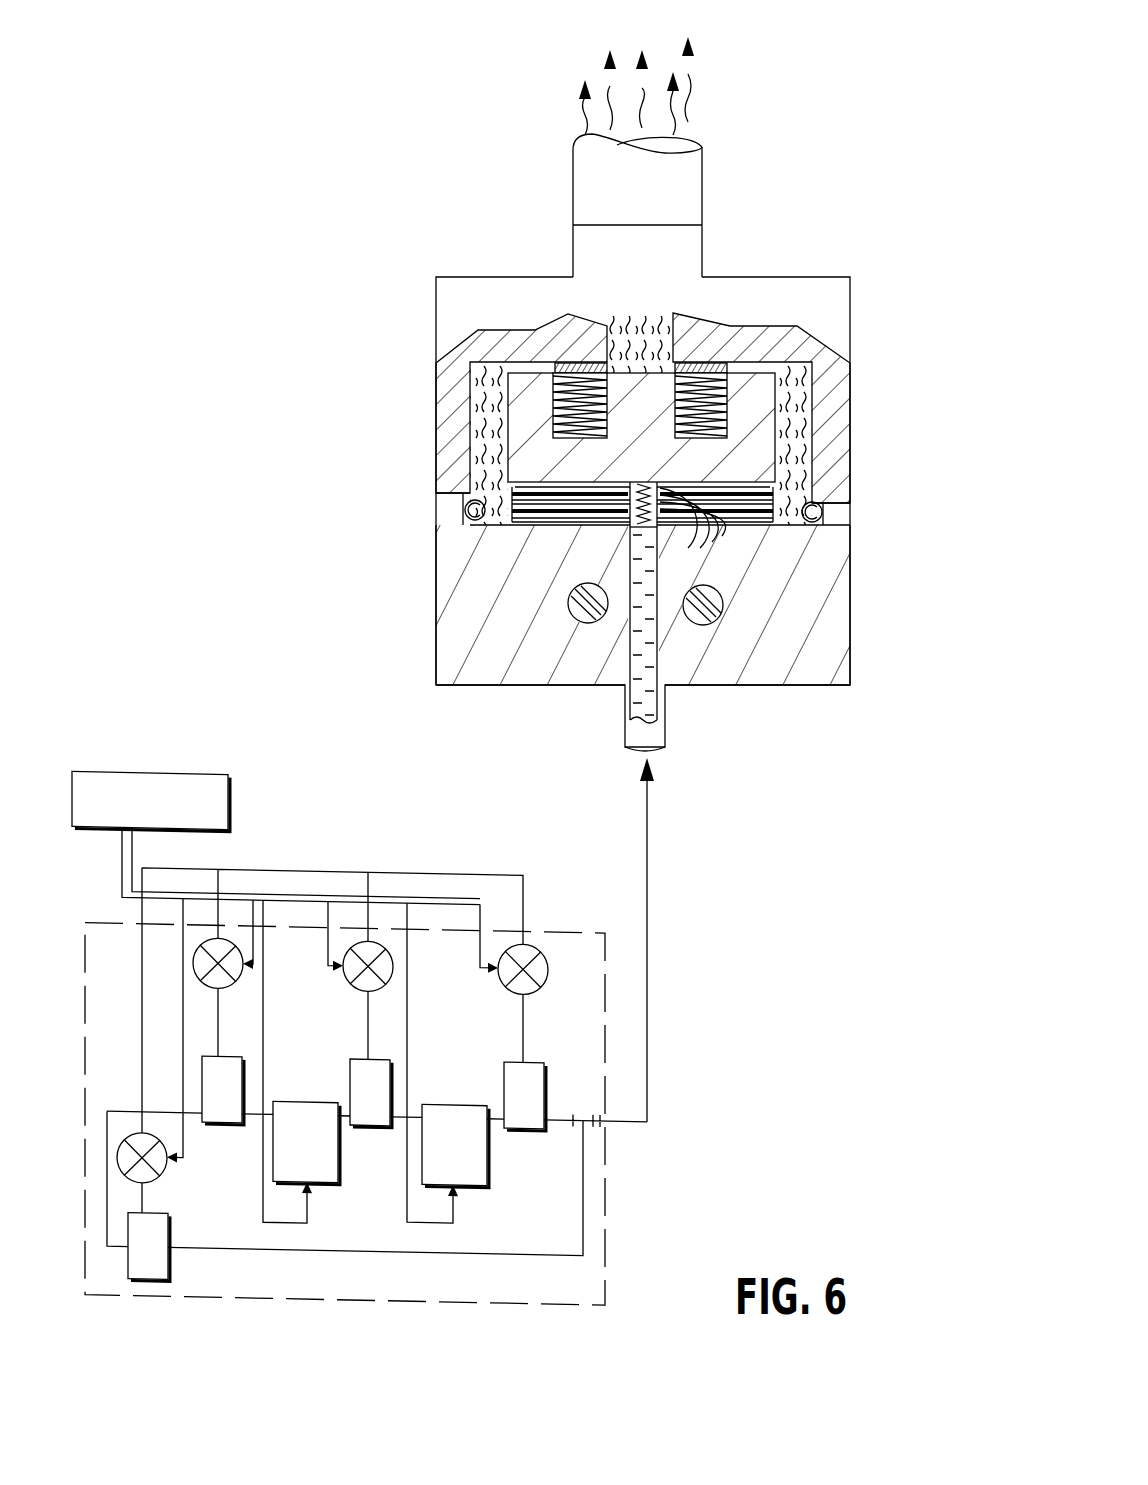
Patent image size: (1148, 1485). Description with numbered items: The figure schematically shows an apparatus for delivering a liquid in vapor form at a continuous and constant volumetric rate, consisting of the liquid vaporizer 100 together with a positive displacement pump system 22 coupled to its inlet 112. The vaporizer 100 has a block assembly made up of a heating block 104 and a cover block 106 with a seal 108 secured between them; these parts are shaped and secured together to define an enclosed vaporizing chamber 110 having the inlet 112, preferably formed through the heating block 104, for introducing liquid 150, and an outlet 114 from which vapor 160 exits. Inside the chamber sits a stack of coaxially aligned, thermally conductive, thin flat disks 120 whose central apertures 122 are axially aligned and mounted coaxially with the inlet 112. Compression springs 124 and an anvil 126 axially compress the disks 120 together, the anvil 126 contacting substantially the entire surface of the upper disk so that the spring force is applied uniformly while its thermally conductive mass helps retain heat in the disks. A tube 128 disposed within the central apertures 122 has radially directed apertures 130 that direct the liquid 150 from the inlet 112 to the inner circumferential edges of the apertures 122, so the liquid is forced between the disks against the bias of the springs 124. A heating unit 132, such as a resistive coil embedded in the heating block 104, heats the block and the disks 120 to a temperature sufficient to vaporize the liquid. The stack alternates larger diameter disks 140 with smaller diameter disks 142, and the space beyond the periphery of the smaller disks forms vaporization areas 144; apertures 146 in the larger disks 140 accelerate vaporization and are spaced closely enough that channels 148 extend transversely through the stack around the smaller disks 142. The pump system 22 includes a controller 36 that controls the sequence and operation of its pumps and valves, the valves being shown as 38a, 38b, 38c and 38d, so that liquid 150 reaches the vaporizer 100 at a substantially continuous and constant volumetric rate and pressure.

The liquid vaporizer 100 is at (812, 174).
The heating block 104 is at (840, 632).
The cover block 106 is at (838, 313).
The seal 108 is at (841, 511).
The vaporizing chamber 110 is at (842, 362).
The inlet 112 is at (627, 735).
The outlet 114 is at (587, 170).
The disks 120 is at (684, 546).
The central apertures 122 is at (634, 490).
The compression springs 124 is at (567, 362).
The anvil 126 is at (752, 380).
The tube 128 is at (630, 531).
The radially directed apertures 130 is at (630, 525).
The heating unit 132 is at (578, 607).
The larger diameter disks 140 is at (520, 510).
The smaller diameter disks 142 is at (562, 514).
The vaporization areas 144 is at (513, 487).
The apertures 146 is at (536, 493).
The channels 148 is at (752, 527).
The liquid 150 is at (647, 703).
The vapor 160 is at (708, 95).
The controller 36 is at (177, 772).
The positive displacement pump system 22 is at (565, 925).
The valve 38a is at (541, 979).
The valve 38b is at (348, 978).
The valve 38c is at (240, 974).
The valve 38d is at (160, 1176).